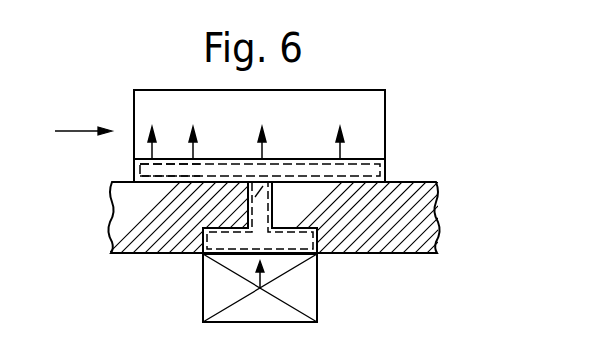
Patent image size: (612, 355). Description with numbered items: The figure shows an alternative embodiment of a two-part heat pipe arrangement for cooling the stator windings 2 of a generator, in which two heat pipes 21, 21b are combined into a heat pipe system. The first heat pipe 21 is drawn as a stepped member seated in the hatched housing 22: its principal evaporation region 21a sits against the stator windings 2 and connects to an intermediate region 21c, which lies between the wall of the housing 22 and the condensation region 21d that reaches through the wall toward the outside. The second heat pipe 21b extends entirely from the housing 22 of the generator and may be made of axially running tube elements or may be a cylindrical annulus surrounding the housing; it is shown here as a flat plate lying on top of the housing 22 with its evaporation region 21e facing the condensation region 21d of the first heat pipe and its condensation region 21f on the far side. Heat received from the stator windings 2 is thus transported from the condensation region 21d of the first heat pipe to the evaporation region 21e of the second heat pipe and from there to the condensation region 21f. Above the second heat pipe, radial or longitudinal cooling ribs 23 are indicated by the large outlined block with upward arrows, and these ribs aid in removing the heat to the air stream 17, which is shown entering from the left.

The stator windings 2 is at (215, 290).
The air stream 17 is at (78, 130).
The heat pipe 21 is at (260, 178).
The principal evaporation region 21a is at (327, 254).
The heat pipe 21b is at (383, 176).
The intermediate region 21c is at (262, 203).
The condensation region 21d is at (247, 206).
The evaporation region 21e is at (155, 176).
The condensation region 21f is at (152, 165).
The housing 22 is at (423, 208).
The cooling ribs 23 is at (363, 105).